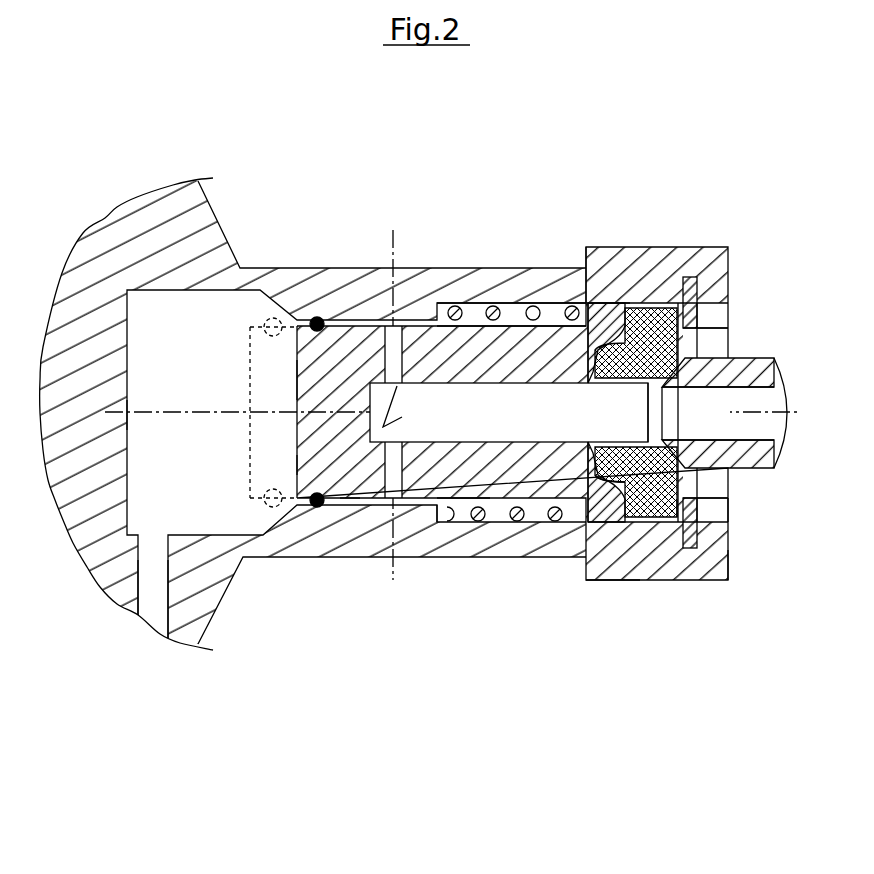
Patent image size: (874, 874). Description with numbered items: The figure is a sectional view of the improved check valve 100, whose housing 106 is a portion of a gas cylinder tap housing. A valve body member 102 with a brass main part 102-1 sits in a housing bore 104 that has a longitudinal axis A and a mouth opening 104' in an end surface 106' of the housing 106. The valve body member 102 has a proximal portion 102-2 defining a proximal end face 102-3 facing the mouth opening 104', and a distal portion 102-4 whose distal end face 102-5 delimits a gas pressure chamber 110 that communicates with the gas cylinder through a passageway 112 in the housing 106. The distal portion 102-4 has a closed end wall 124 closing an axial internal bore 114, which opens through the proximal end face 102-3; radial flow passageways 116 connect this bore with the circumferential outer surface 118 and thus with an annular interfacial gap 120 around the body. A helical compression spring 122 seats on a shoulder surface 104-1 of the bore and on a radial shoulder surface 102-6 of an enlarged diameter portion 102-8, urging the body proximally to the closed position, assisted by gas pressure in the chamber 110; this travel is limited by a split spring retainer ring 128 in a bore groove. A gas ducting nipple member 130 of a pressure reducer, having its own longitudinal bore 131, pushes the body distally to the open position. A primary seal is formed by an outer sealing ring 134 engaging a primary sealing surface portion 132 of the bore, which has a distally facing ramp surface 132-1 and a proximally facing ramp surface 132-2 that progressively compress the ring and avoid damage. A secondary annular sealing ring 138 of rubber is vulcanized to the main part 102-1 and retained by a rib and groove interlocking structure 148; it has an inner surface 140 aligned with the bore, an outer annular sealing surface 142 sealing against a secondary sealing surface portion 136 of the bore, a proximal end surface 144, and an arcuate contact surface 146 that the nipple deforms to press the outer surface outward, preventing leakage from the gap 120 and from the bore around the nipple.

The check valve 100 is at (447, 667).
The valve body member 102 is at (503, 490).
The main part 102-1 is at (463, 492).
The proximal portion 102-2 is at (611, 318).
The proximal end face 102-3 is at (697, 493).
The distal portion 102-4 is at (345, 345).
The distal end face 102-5 is at (297, 373).
The radial shoulder surface 102-6 is at (585, 300).
The enlarged diameter portion 102-8 is at (590, 560).
The housing bore 104 is at (511, 246).
The mouth opening 104' is at (759, 529).
The shoulder surface 104-1 is at (435, 512).
The housing 106 is at (313, 414).
The end surface 106' is at (759, 575).
The gas pressure chamber 110 is at (155, 429).
The passageway 112 is at (156, 595).
The axial internal bore 114 is at (500, 440).
The flow passageway 116 is at (387, 412).
The circumferential outer surface 118 is at (472, 324).
The annular interfacial gap 120 is at (457, 503).
The helical compression spring 122 is at (535, 308).
The closed end wall 124 is at (298, 465).
The split spring retainer ring 128 is at (691, 283).
The gas ducting nipple member 130 is at (748, 372).
The longitudinal bore 131 is at (718, 413).
The primary sealing surface portion 132 is at (353, 497).
The distally facing ramp surface 132-1 is at (250, 327).
The proximally facing ramp surface 132-2 is at (437, 318).
The outer sealing ring 134 is at (316, 318).
The secondary sealing surface portion 136 is at (640, 520).
The secondary annular sealing ring 138 is at (666, 318).
The inner surface 140 is at (599, 386).
The outer annular sealing surface 142 is at (667, 523).
The proximal end surface 144 is at (697, 328).
The arcuate contact surface 146 is at (667, 452).
The rib and groove interlocking structure 148 is at (623, 495).
The longitudinal axis A is at (247, 413).